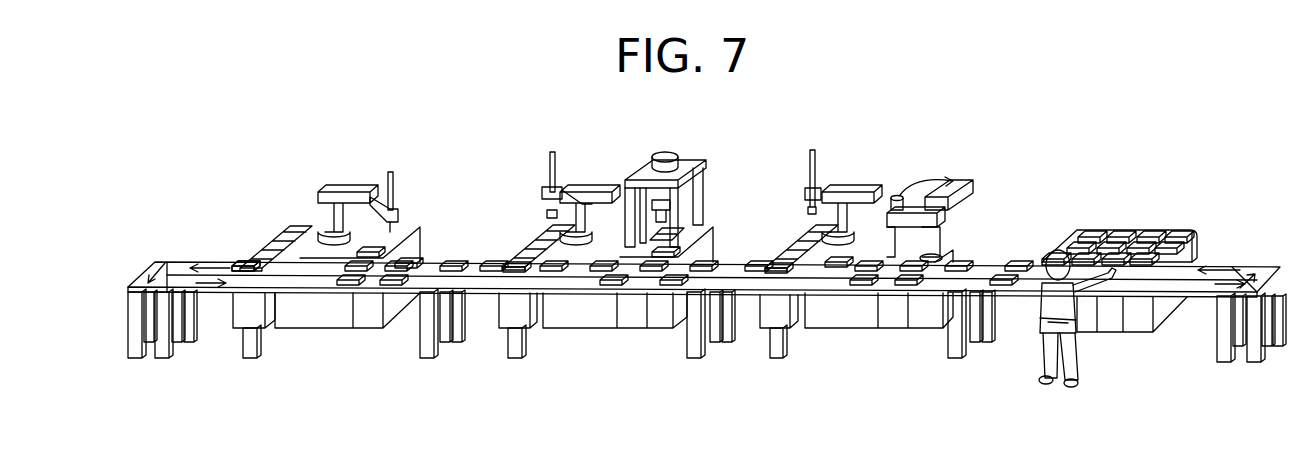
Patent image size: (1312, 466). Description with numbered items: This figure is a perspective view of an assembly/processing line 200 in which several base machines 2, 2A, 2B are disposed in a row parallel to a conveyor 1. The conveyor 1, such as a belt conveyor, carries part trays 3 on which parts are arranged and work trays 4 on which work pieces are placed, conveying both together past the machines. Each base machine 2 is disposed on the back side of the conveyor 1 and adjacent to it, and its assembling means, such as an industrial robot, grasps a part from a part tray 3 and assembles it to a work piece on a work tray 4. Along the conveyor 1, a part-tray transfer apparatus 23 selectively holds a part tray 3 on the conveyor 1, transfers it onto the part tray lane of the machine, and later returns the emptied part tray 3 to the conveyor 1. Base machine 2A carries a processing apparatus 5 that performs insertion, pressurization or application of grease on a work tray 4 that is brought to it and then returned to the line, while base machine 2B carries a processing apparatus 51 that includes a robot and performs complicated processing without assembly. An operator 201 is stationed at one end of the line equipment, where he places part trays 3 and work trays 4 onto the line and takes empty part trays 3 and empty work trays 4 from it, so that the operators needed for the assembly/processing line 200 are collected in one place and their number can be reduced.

The conveyor 1 is at (1248, 254).
The base machine 2 is at (336, 184).
The base machine 2A is at (584, 181).
The base machine 2B is at (870, 180).
The part tray 3 is at (290, 228).
The work tray 4 is at (385, 247).
The processing apparatus 5 is at (697, 143).
The part-tray transfer apparatus 23 is at (250, 263).
The processing apparatus 51 is at (950, 218).
The assembly/processing line 200 is at (1046, 179).
The operator 201 is at (1035, 362).